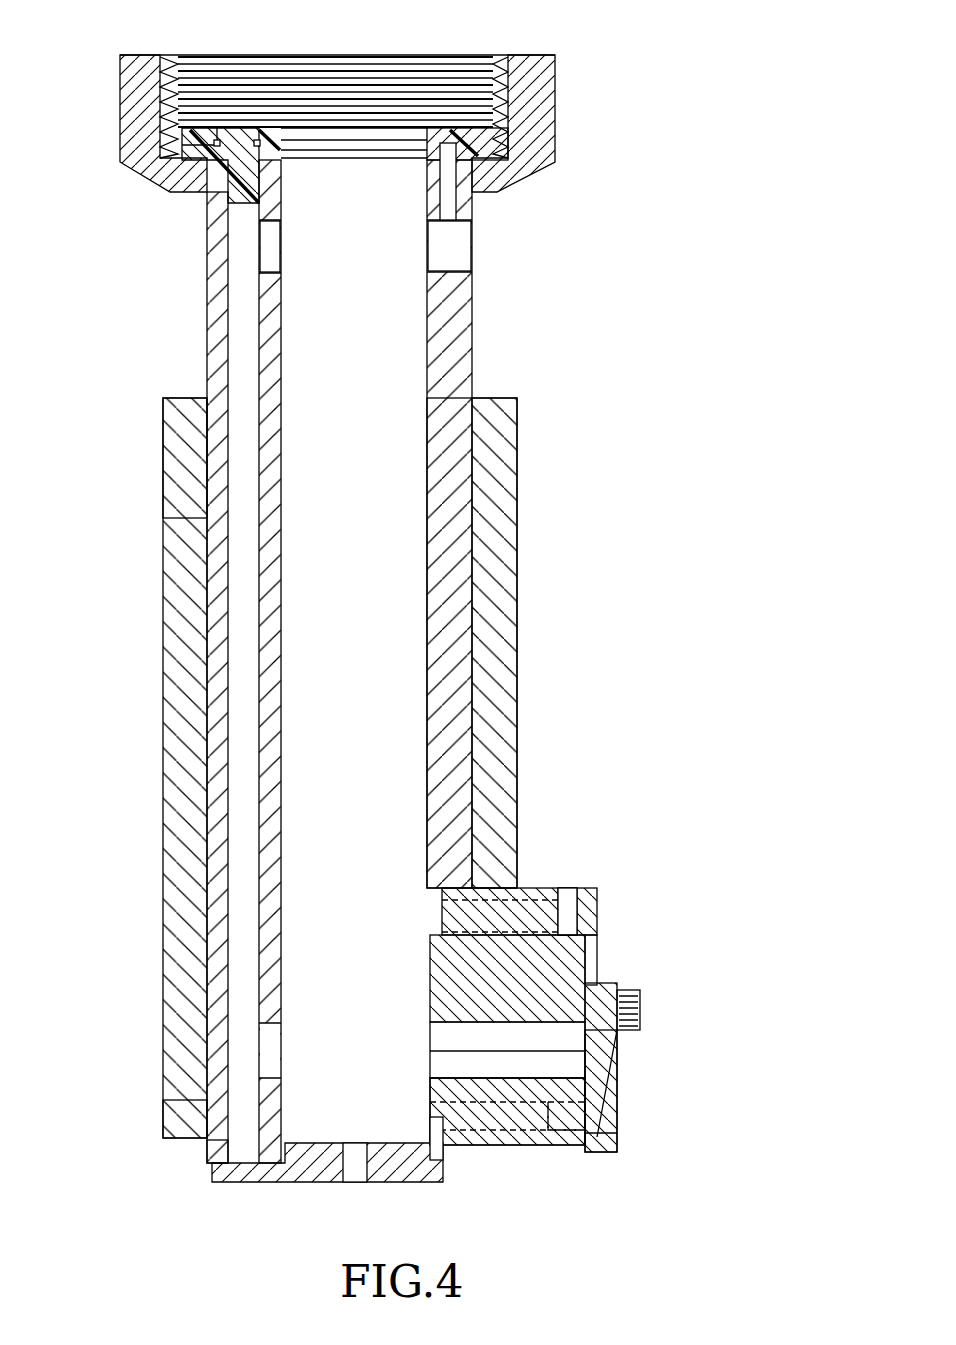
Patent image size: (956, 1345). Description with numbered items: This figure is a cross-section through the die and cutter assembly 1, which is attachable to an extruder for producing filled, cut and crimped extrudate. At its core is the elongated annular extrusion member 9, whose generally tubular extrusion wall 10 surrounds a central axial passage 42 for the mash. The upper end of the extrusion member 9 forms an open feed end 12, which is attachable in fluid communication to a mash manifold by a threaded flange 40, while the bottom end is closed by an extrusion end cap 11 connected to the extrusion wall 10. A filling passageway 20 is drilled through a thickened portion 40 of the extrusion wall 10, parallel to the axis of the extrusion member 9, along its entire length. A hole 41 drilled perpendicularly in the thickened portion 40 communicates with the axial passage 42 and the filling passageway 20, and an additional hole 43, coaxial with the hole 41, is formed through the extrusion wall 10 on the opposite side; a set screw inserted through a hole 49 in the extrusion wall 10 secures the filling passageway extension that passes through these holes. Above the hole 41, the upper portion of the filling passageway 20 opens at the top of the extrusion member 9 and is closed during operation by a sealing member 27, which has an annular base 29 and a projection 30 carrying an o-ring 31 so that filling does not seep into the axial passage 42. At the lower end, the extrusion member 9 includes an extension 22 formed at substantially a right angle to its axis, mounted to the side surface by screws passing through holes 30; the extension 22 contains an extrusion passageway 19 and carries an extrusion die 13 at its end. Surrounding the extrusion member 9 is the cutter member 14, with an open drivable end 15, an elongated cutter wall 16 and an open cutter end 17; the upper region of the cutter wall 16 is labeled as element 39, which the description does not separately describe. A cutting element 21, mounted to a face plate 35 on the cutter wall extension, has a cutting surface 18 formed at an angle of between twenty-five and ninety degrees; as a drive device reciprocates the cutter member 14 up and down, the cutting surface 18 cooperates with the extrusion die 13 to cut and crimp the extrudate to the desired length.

The die and cutter assembly 1 is at (563, 282).
The annular extrusion member 9 is at (224, 1043).
The extrusion wall 10 is at (215, 1150).
The extrusion end cap 11 is at (290, 1172).
The open feed end 12 is at (347, 190).
The extrusion die 13 is at (568, 1038).
The cutter member 14 is at (524, 694).
The open drivable end 15 is at (498, 398).
The elongated cutter wall 16 is at (175, 742).
The open cutter end 17 is at (165, 1134).
The cutting surface 18 is at (598, 1130).
The extrusion passageway 19 is at (470, 1100).
The filling passageway 20 is at (250, 912).
The cutting element 21 is at (597, 1000).
The extension 22 is at (512, 1135).
The sealing member 27 is at (290, 125).
The annular base 29 is at (465, 150).
The projection 30 is at (226, 172).
The o-ring 31 is at (259, 145).
The face plate 35 is at (590, 910).
The outer sleeve 39 is at (162, 438).
The thickened portion 40 is at (540, 105).
The hole 41 is at (269, 246).
The axial passage 42 is at (372, 579).
The additional hole 43 is at (457, 255).
The hole 49 is at (446, 186).